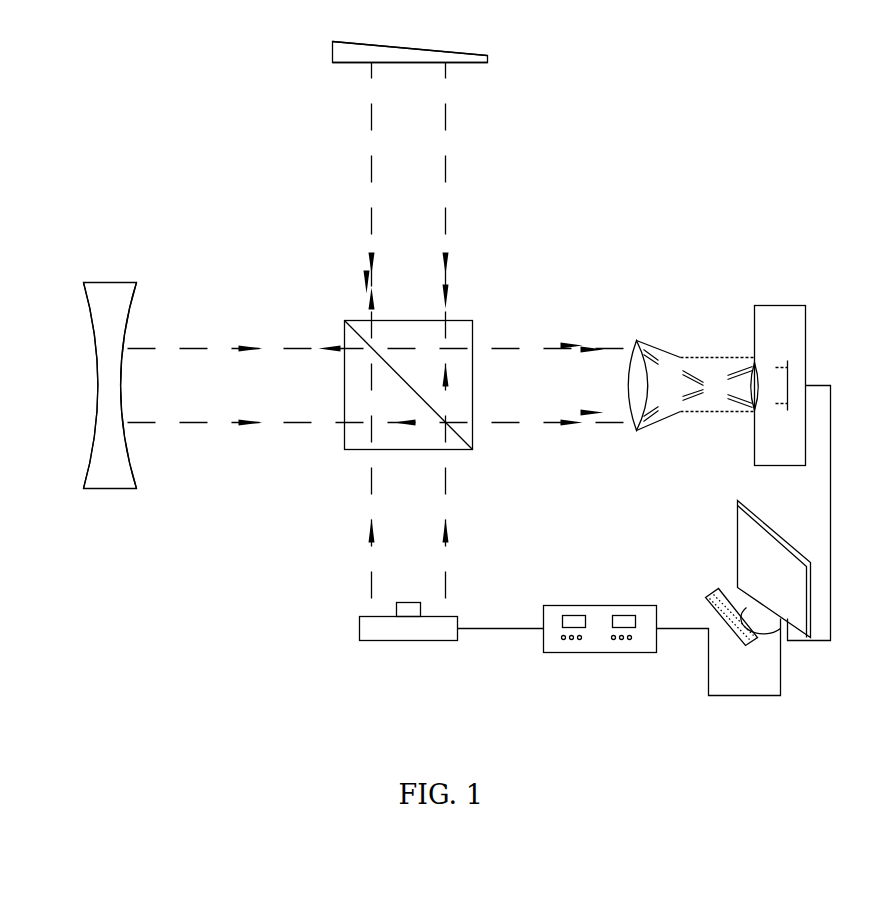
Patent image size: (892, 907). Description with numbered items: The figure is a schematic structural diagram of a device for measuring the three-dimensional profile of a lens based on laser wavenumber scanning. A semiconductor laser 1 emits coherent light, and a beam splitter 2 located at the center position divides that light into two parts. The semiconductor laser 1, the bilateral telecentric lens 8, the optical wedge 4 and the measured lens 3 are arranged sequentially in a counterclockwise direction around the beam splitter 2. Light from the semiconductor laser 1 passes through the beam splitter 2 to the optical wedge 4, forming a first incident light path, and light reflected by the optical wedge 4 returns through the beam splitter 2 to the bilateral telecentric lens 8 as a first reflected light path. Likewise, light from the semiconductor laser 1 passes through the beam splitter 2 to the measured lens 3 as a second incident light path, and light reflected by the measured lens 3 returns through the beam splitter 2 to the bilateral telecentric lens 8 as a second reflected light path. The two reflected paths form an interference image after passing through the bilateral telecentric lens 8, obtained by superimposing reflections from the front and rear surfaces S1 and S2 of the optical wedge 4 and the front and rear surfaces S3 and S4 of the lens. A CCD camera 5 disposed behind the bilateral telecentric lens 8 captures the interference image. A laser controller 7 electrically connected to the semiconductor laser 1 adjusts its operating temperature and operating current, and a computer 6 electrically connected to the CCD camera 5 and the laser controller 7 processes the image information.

The semiconductor laser 1 is at (355, 650).
The beam splitter 2 is at (361, 418).
The measured lens 3 is at (154, 370).
The optical wedge 4 is at (449, 81).
The CCD camera 5 is at (770, 350).
The computer 6 is at (734, 573).
The laser controller 7 is at (581, 657).
The bilateral telecentric lens 8 is at (661, 417).
The front surface of the optical wedge S1 is at (386, 82).
The rear surface of the optical wedge S2 is at (386, 28).
The front surface of the lens S3 is at (156, 387).
The rear surface of the lens S4 is at (68, 387).